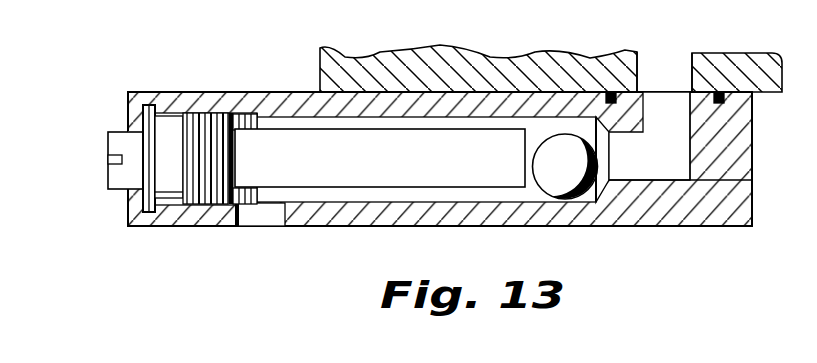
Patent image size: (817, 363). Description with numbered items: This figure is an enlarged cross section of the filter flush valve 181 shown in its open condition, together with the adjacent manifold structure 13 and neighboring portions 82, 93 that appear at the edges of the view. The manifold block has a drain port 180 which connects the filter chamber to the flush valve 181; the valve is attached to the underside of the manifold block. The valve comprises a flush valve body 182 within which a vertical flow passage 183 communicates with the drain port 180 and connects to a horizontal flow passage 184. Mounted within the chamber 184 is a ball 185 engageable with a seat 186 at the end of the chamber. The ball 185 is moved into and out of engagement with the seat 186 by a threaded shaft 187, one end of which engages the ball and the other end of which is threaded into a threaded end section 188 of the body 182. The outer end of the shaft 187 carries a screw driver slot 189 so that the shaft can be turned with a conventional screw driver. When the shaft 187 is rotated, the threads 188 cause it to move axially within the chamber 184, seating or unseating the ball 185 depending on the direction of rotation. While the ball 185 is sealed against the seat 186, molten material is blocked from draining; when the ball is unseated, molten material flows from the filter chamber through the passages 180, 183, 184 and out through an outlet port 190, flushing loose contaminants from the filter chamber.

The base plate 13 is at (313, 63).
The adjacent member 82 is at (749, 53).
The adjacent member 93 is at (808, 294).
The drain port 180 is at (667, 66).
The flush valve 181 is at (424, 210).
The flush valve body 182 is at (665, 209).
The vertical flow passage 183 is at (673, 136).
The horizontal flow passage 184 is at (477, 197).
The ball 185 is at (560, 178).
The seat 186 is at (603, 134).
The threaded shaft 187 is at (418, 171).
The threaded end section 188 is at (247, 117).
The screw driver slot 189 is at (105, 157).
The outlet port 190 is at (264, 220).